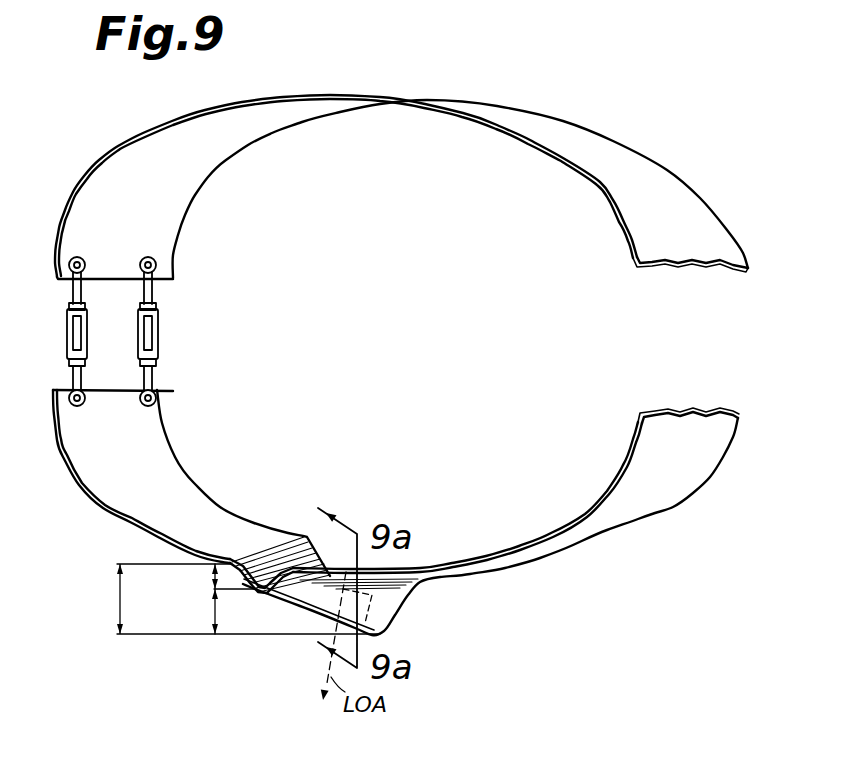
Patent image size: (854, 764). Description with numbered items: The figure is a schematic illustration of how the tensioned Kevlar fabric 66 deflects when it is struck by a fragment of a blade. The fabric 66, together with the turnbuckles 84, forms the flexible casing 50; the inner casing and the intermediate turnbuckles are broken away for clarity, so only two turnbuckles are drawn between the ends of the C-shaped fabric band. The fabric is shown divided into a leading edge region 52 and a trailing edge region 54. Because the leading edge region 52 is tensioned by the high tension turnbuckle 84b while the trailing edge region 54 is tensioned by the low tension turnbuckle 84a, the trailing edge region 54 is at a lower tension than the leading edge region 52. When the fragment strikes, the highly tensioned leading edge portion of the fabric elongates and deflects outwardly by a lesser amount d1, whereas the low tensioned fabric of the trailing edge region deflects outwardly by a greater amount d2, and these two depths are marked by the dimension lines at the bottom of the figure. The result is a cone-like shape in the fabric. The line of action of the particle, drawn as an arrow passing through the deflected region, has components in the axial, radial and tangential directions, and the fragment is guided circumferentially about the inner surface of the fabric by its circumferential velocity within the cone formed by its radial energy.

The flexible casing 50 is at (620, 123).
The leading edge region 52 is at (142, 510).
The trailing edge region 54 is at (226, 500).
The tensioned Kevlar fabric 66 is at (148, 460).
The turnbuckles 84 is at (127, 331).
The low tension turnbuckle 84a is at (168, 309).
The high tension turnbuckle 84b is at (93, 320).
The deflection of the leading edge portion d1 is at (214, 576).
The deflection of the trailing edge region d2 is at (118, 598).